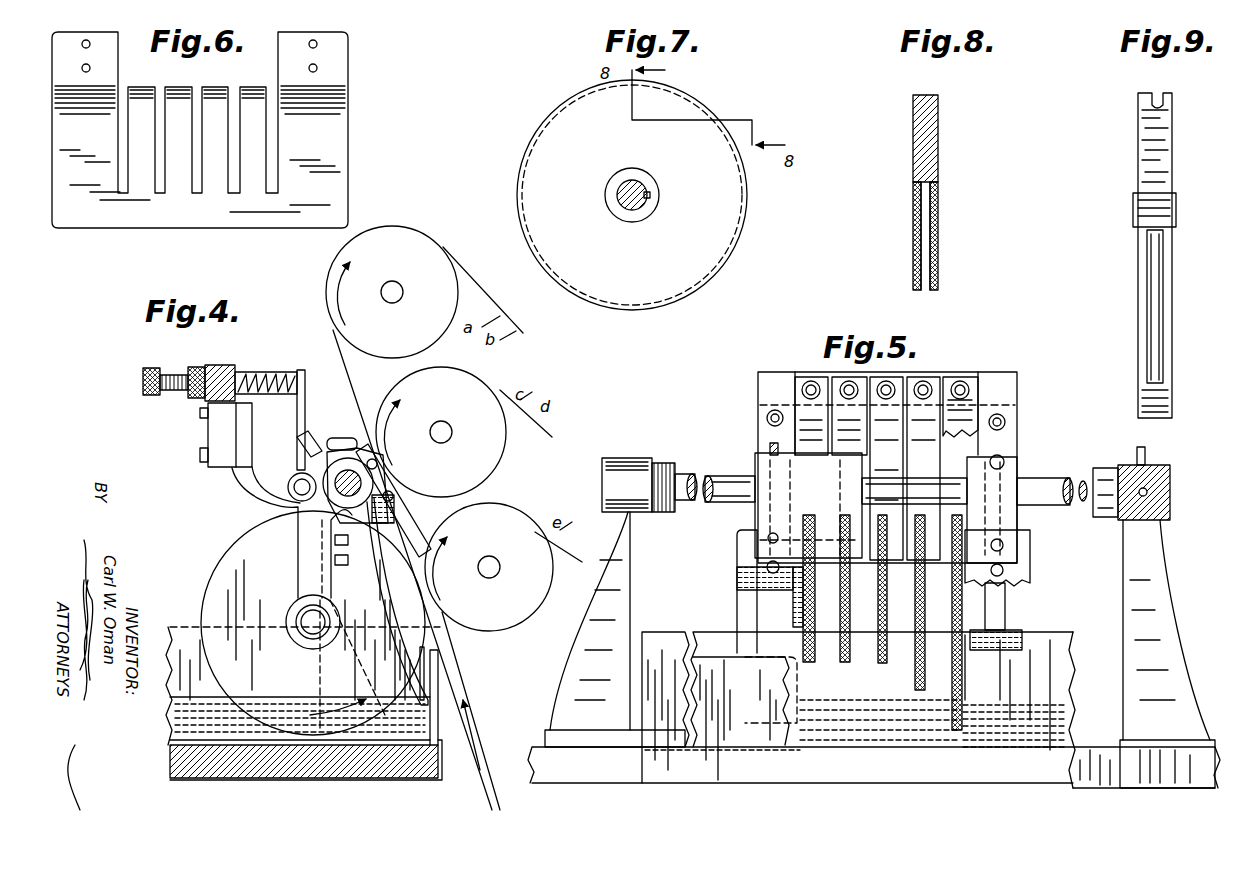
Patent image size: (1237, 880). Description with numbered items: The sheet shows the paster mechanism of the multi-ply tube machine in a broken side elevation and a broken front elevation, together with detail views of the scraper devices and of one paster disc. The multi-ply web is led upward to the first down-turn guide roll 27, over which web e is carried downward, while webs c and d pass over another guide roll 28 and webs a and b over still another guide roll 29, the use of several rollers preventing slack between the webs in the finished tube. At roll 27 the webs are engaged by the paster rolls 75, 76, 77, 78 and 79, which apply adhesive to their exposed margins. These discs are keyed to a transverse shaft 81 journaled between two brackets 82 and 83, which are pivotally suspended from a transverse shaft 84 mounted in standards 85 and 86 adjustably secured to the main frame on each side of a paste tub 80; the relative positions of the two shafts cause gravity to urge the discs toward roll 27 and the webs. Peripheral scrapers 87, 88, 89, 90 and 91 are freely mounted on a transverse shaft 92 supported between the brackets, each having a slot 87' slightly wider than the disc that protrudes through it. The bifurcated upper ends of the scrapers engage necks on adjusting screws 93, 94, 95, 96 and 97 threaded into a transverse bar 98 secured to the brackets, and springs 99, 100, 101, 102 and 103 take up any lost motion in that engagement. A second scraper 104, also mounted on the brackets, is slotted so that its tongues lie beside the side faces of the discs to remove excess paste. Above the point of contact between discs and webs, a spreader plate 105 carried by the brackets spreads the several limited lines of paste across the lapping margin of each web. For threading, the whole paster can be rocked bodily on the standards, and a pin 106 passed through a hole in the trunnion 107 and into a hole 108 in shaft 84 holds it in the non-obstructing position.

In FIG. 4, the first down-turn guide roll 27 is at (489, 567).
In FIG. 4, the guide roll 28 is at (441, 432).
In FIG. 4, the guide roll 29 is at (392, 292).
In FIG. 7, the paster roll 75 is at (528, 144).
In FIG. 8, the paster roll 75 is at (912, 167).
In FIG. 4, the paster roll 75 is at (232, 558).
In FIG. 5, the paster roll 75 is at (808, 735).
In FIG. 5, the paster roll 76 is at (852, 735).
In FIG. 5, the paster roll 77 is at (890, 735).
In FIG. 5, the paster roll 78 is at (928, 735).
In FIG. 5, the paster roll 79 is at (968, 735).
In FIG. 4, the paste tub 80 is at (190, 637).
In FIG. 5, the paste tub 80 is at (876, 710).
In FIG. 7, the transverse shaft 81 is at (638, 186).
In FIG. 4, the transverse shaft 81 is at (304, 636).
In FIG. 4, the bracket 82 is at (305, 557).
In FIG. 5, the bracket 82 is at (748, 528).
In FIG. 5, the bracket 83 is at (1006, 594).
In FIG. 4, the transverse shaft 84 is at (374, 478).
In FIG. 5, the transverse shaft 84 is at (697, 479).
In FIG. 5, the standard 85 is at (645, 585).
In FIG. 4, the standard 86 is at (380, 518).
In FIG. 5, the standard 86 is at (1123, 610).
In FIG. 9, the peripheral scraper 87 is at (1132, 255).
In FIG. 4, the peripheral scraper 87 is at (425, 601).
In FIG. 5, the peripheral scraper 87 is at (851, 622).
In FIG. 9, the slot 87' is at (1126, 306).
In FIG. 5, the slot 87' is at (769, 597).
In FIG. 5, the peripheral scraper 88 is at (836, 735).
In FIG. 5, the peripheral scraper 89 is at (872, 735).
In FIG. 5, the peripheral scraper 90 is at (980, 460).
In FIG. 5, the peripheral scraper 91 is at (1013, 436).
In FIG. 4, the transverse shaft 92 is at (288, 489).
In FIG. 4, the adjusting screw 93 is at (165, 396).
In FIG. 5, the adjusting screw 93 is at (814, 383).
In FIG. 5, the adjusting screw 94 is at (856, 386).
In FIG. 5, the adjusting screw 95 is at (894, 386).
In FIG. 5, the adjusting screw 96 is at (932, 386).
In FIG. 5, the adjusting screw 97 is at (968, 384).
In FIG. 4, the transverse bar 98 is at (208, 435).
In FIG. 5, the transverse bar 98 is at (1005, 386).
In FIG. 4, the spring 99 is at (276, 371).
In FIG. 5, the spring 99 is at (798, 392).
In FIG. 5, the spring 100 is at (848, 404).
In FIG. 5, the spring 101 is at (886, 404).
In FIG. 5, the spring 102 is at (925, 406).
In FIG. 5, the spring 103 is at (975, 408).
In FIG. 6, the second scraper 104 is at (200, 130).
In FIG. 4, the second scraper 104 is at (412, 668).
In FIG. 5, the second scraper 104 is at (1032, 562).
In FIG. 4, the spreader plate 105 is at (410, 533).
In FIG. 5, the spreader plate 105 is at (1050, 543).
In FIG. 9, the pin 106 is at (1154, 319).
In FIG. 4, the pin 106 is at (318, 444).
In FIG. 5, the pin 106 is at (1143, 454).
In FIG. 4, the trunnion 107 is at (322, 518).
In FIG. 5, the trunnion 107 is at (1100, 468).
In FIG. 4, the hole 108 is at (345, 486).
In FIG. 5, the hole 108 is at (1170, 496).